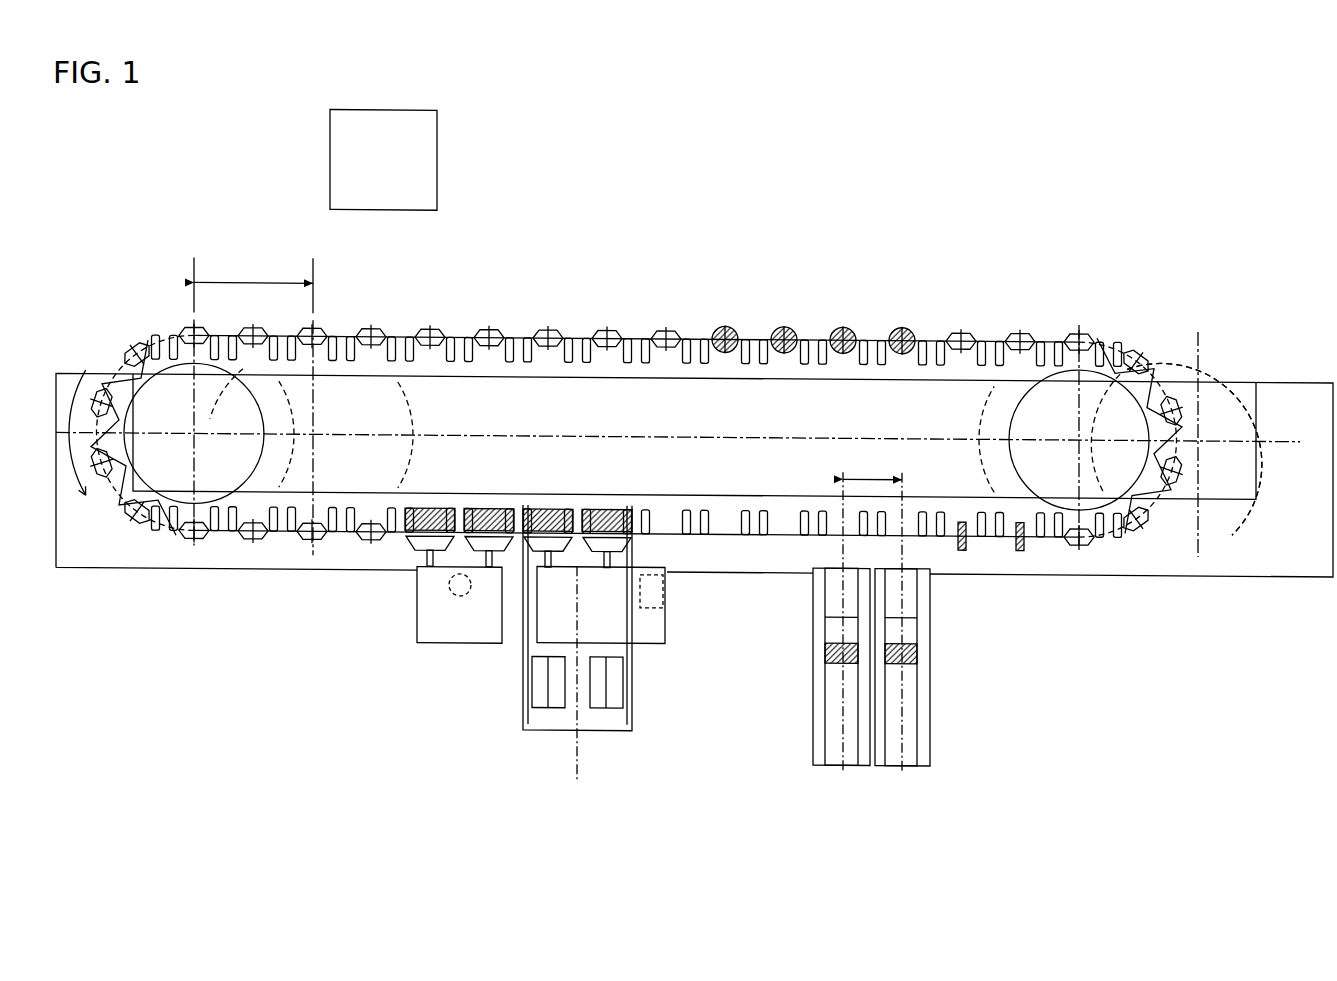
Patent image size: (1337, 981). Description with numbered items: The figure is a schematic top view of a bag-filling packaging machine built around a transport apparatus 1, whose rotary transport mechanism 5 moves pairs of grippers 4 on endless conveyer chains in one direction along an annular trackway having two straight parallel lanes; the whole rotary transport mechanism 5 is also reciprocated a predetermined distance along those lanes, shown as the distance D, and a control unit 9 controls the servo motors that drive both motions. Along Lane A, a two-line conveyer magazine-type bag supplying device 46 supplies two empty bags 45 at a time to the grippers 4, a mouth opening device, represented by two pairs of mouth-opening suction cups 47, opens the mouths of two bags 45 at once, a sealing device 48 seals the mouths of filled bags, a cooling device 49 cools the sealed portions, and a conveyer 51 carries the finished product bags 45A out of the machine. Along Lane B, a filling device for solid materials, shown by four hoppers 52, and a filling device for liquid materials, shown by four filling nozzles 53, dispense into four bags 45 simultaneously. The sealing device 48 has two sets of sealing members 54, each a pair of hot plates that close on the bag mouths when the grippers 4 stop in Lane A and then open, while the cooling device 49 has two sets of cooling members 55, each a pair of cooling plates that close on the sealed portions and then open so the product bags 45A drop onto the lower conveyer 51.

The transport apparatus 1 is at (1012, 220).
The gripper 4 is at (800, 537).
The rotary transport mechanism 5 is at (1038, 305).
The control unit 9 is at (426, 149).
The bag 45 is at (913, 596).
The product bag 45A is at (615, 686).
The bag supplying device 46 is at (957, 706).
The mouth-opening suction cup 47 is at (1012, 501).
The sealing device 48 is at (447, 648).
The cooling device 49 is at (665, 640).
The conveyer 51 is at (552, 723).
The hopper 52 is at (904, 324).
The filling nozzle 53 is at (667, 338).
The sealing member 54 is at (470, 551).
The cooling member 55 is at (591, 572).